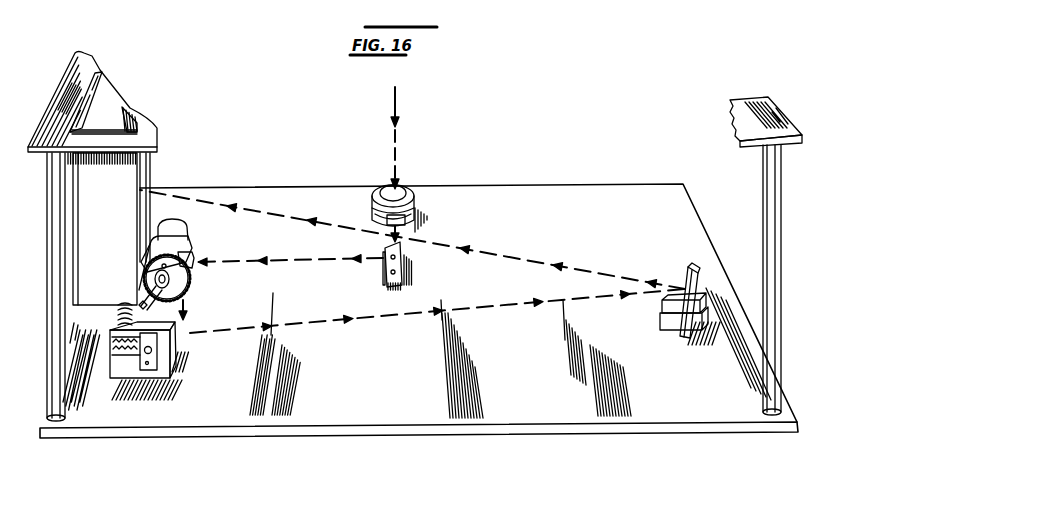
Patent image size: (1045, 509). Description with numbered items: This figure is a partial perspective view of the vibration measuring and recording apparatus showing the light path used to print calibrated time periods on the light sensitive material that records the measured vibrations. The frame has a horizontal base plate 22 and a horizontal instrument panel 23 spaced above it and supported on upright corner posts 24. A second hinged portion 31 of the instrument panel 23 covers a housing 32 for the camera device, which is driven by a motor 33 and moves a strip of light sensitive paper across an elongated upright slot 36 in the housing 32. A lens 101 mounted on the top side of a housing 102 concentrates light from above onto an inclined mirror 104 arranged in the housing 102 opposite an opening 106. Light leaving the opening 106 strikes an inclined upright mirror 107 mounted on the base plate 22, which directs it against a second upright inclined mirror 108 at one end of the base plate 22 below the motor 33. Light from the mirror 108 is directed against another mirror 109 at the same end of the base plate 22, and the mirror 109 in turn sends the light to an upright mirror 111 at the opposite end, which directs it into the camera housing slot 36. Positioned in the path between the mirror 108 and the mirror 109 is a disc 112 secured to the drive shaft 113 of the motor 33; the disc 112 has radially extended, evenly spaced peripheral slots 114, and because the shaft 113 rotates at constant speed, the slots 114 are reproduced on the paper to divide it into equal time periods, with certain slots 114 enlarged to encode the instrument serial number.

The base plate 22 is at (184, 417).
The instrument panel 23 is at (77, 52).
The corner post 24 is at (53, 296).
The second hinged portion 31 is at (112, 96).
The housing 32 is at (75, 259).
The motor 33 is at (184, 226).
The slot 36 is at (137, 223).
The lens 101 is at (403, 186).
The housing 102 is at (418, 205).
The inclined mirror 104 is at (405, 217).
The opening 106 is at (384, 221).
The inclined upright mirror 107 is at (383, 268).
The second upright inclined mirror 108 is at (193, 253).
The mirror 109 is at (186, 344).
The upright mirror 111 is at (679, 333).
The disc 112 is at (191, 283).
The drive shaft 113 is at (141, 306).
The slots 114 is at (140, 290).